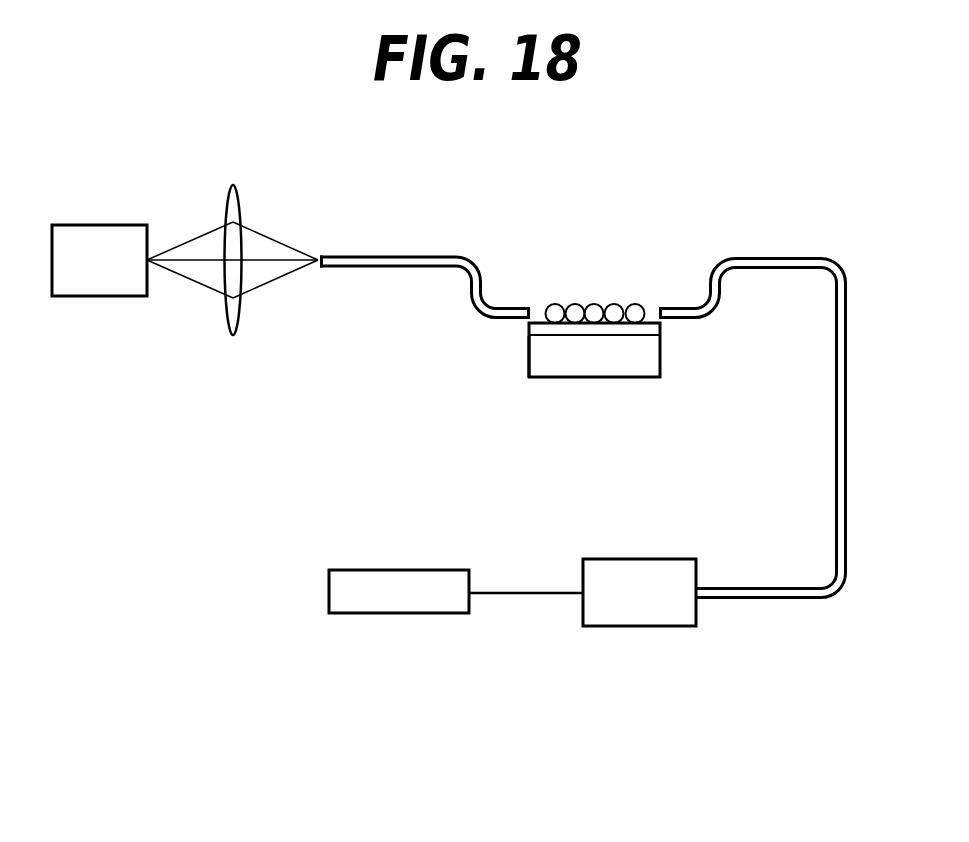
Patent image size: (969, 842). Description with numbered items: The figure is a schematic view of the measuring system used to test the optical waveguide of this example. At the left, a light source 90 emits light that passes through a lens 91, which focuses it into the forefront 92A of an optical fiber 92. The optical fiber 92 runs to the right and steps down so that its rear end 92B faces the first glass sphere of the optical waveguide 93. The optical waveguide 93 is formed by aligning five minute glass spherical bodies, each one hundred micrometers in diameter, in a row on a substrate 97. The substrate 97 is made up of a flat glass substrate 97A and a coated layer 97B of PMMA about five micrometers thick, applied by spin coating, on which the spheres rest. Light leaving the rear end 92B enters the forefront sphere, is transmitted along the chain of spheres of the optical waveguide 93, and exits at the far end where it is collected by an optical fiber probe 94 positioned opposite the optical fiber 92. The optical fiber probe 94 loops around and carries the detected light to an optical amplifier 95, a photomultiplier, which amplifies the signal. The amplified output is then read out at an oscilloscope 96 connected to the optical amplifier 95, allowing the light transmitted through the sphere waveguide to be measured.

The light source 90 is at (98, 285).
The lens 91 is at (233, 335).
The optical fiber 92 is at (398, 260).
The forefront of the optical fiber 92A is at (323, 264).
The rear end of the optical fiber 92B is at (543, 307).
The optical waveguide 93 is at (593, 302).
The optical fiber probe 94 is at (775, 257).
The optical amplifier 95 is at (642, 626).
The oscilloscope 96 is at (413, 613).
The substrate 97 is at (592, 378).
The flat glass substrate 97A is at (543, 365).
The coated layer 97B is at (658, 332).